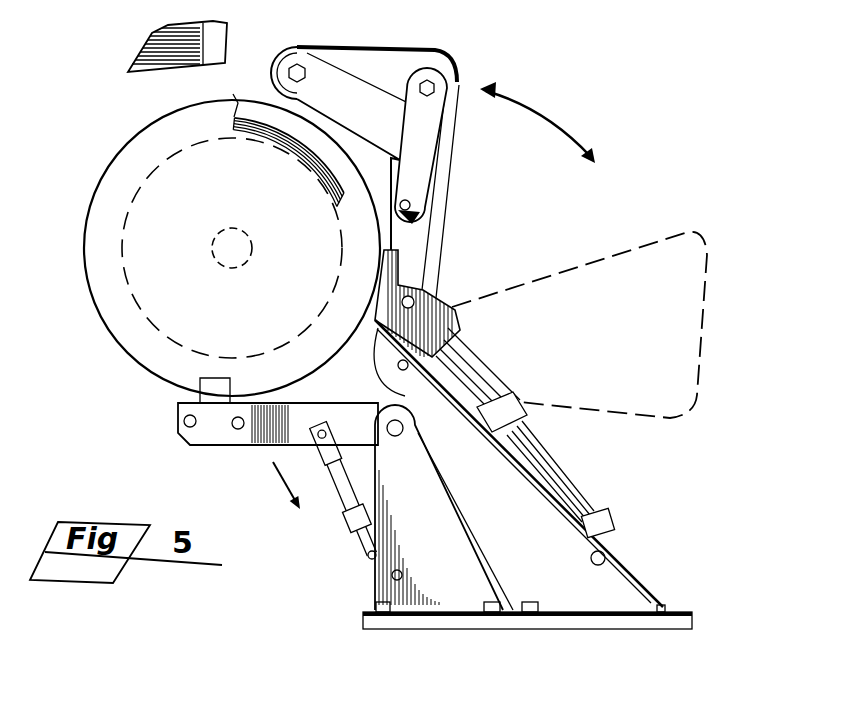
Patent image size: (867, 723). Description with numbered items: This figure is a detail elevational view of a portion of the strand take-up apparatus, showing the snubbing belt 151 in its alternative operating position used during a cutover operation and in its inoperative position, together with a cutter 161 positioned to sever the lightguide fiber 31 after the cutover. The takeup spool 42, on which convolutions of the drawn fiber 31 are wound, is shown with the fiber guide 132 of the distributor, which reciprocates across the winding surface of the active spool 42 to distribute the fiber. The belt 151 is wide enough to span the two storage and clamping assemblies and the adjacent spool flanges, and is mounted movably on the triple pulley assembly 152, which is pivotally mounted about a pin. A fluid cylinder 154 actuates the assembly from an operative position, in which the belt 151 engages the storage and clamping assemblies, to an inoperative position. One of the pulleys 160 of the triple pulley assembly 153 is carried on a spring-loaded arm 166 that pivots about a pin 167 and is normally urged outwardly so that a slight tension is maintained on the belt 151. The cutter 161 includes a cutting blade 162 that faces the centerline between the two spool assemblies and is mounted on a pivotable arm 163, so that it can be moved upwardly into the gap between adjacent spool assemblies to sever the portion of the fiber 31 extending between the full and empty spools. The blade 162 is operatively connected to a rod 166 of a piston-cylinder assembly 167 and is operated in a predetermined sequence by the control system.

The takeup spool 42 is at (99, 164).
The lightguide fiber 31 is at (287, 100).
The fiber guide 132 is at (210, 68).
The triple pulley assembly 152 is at (363, 86).
The belt 151 is at (690, 234).
The pulley 160 is at (475, 66).
The spring-loaded arm 166 is at (425, 150).
The pin 167 is at (410, 206).
The triple pulley assembly 153 is at (400, 367).
The fluid cylinder 154 is at (582, 490).
The pivotable arm 163 is at (268, 443).
The cutter 161 is at (226, 450).
The cutting blade 162 is at (200, 392).